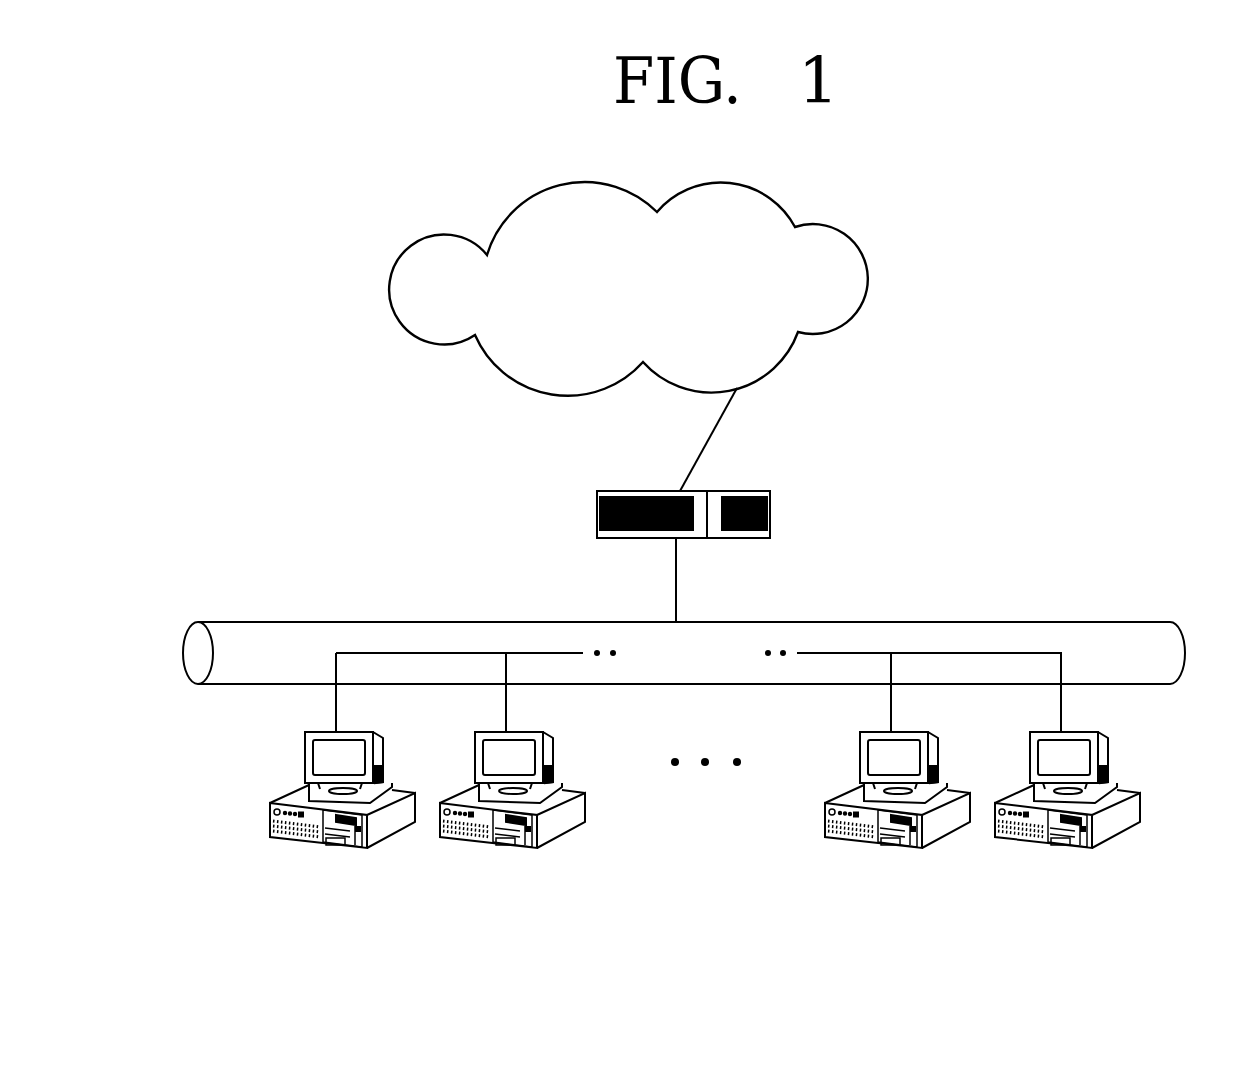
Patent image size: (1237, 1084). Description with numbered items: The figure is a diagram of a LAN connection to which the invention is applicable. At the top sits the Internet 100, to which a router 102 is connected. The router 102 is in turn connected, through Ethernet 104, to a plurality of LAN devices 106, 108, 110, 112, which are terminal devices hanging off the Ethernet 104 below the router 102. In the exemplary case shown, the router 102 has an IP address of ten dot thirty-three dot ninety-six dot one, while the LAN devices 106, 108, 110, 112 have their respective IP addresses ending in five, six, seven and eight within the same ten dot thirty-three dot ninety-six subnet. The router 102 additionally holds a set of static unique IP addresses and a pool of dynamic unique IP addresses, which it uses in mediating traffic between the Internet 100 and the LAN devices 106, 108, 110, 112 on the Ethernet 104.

The Internet 100 is at (868, 287).
The router 102 is at (770, 512).
The Ethernet 104 is at (1061, 622).
The LAN device 106 is at (383, 747).
The LAN device 108 is at (553, 747).
The LAN device 110 is at (938, 747).
The LAN device 112 is at (1108, 747).